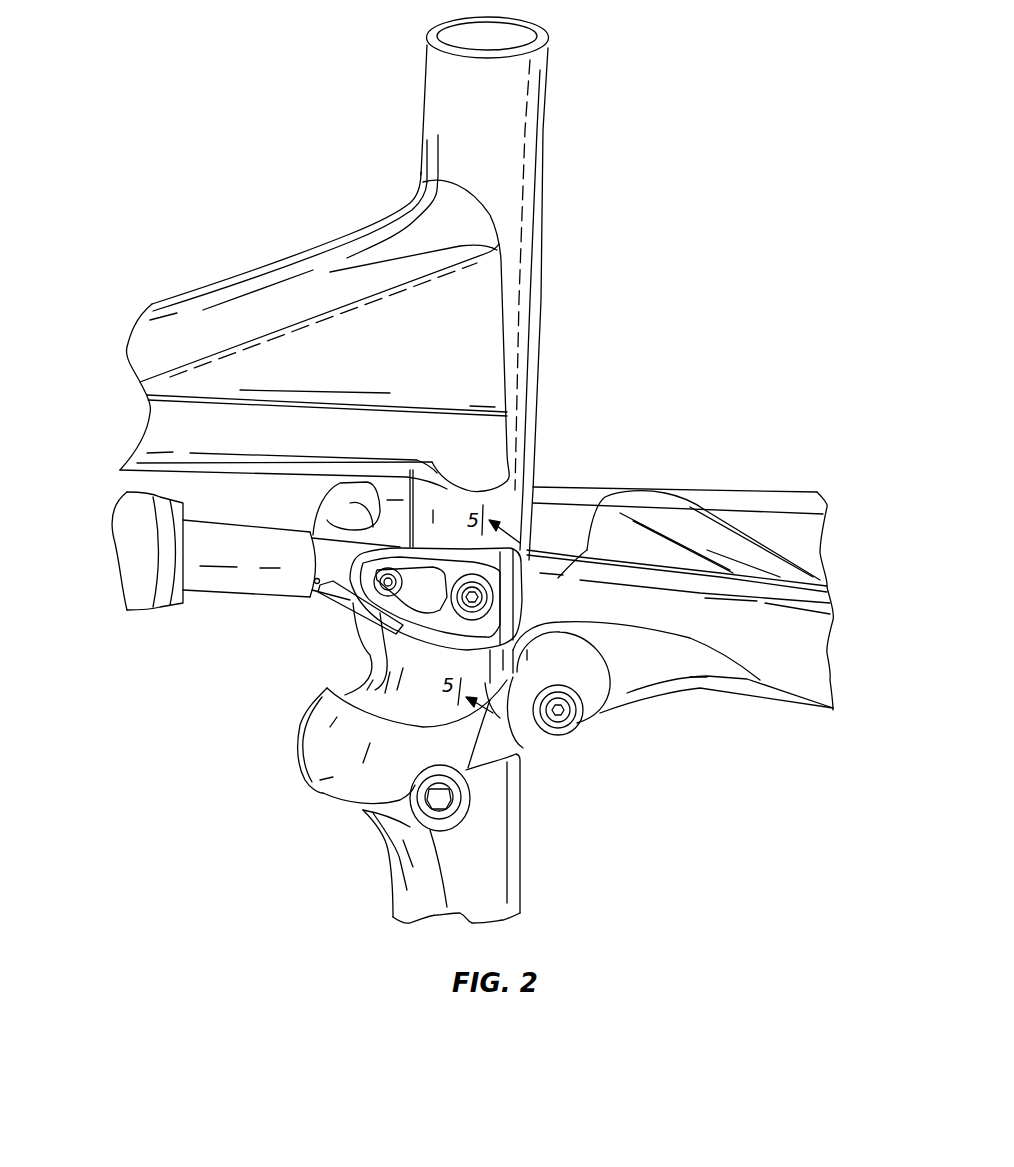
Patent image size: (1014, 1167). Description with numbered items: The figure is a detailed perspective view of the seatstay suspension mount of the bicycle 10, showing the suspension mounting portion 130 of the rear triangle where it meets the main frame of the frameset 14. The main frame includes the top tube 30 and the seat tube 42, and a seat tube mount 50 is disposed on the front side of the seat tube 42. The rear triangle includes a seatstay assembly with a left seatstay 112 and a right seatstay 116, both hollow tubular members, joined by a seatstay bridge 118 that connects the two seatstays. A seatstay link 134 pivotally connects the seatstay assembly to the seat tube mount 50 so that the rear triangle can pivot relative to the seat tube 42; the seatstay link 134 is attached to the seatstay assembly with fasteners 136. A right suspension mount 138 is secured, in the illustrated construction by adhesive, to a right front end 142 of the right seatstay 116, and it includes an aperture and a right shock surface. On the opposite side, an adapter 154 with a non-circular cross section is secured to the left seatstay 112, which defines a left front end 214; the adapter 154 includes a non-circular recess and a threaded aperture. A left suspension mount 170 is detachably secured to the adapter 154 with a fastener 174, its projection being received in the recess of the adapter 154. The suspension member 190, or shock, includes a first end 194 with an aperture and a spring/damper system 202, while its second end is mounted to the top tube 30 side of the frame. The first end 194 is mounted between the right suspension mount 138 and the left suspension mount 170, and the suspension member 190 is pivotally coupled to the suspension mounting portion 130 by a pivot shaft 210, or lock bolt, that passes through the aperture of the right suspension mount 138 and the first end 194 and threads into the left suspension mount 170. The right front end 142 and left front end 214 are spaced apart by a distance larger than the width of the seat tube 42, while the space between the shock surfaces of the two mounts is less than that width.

The bicycle 10 is at (740, 212).
The frameset 14 is at (314, 331).
The top tube 30 is at (187, 330).
The seat tube 42 is at (507, 154).
The seat tube mount 50 is at (400, 830).
The left seatstay 112 is at (790, 648).
The right seatstay 116 is at (694, 575).
The seatstay bridge 118 is at (733, 543).
The suspension mounting portion 130 is at (692, 408).
The seatstay link 134 is at (333, 780).
The fasteners 136 is at (557, 722).
The right suspension mount 138 is at (330, 520).
The right front end 142 is at (340, 485).
The adapter 154 is at (558, 578).
The left suspension mount 170 is at (377, 657).
The fastener 174 is at (522, 583).
The suspension member 190 is at (229, 577).
The first end 194 is at (318, 591).
The spring/damper system 202 is at (140, 583).
The pivot shaft 210 is at (447, 600).
The left front end 214 is at (517, 552).